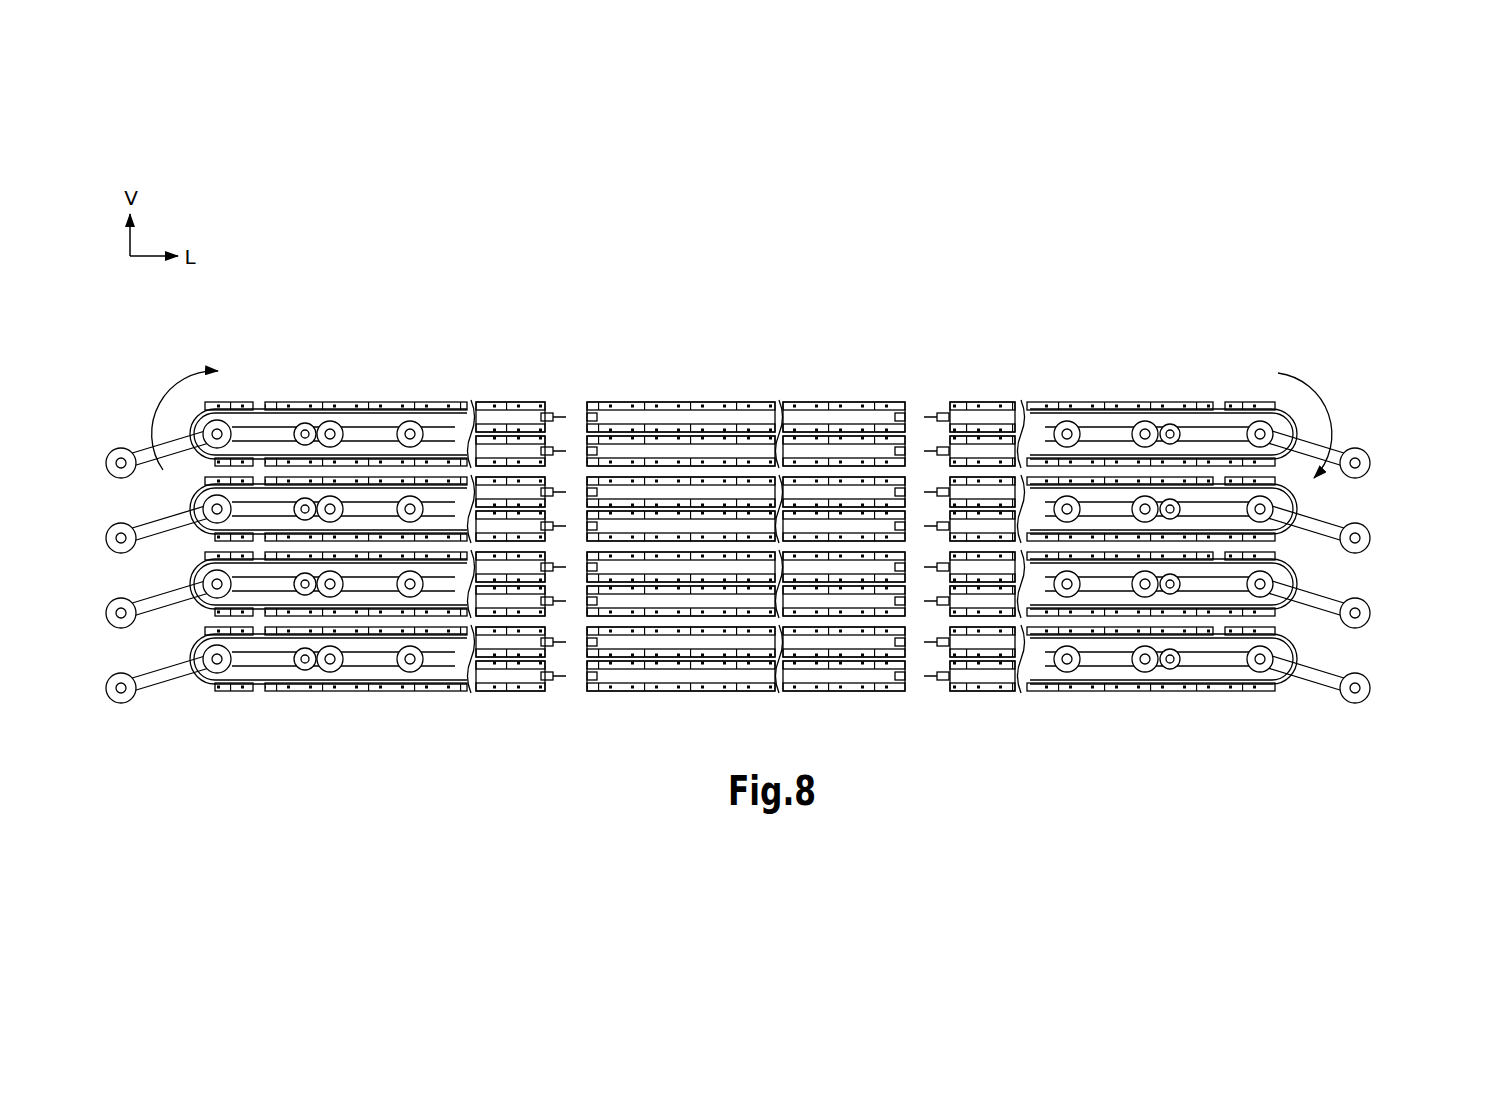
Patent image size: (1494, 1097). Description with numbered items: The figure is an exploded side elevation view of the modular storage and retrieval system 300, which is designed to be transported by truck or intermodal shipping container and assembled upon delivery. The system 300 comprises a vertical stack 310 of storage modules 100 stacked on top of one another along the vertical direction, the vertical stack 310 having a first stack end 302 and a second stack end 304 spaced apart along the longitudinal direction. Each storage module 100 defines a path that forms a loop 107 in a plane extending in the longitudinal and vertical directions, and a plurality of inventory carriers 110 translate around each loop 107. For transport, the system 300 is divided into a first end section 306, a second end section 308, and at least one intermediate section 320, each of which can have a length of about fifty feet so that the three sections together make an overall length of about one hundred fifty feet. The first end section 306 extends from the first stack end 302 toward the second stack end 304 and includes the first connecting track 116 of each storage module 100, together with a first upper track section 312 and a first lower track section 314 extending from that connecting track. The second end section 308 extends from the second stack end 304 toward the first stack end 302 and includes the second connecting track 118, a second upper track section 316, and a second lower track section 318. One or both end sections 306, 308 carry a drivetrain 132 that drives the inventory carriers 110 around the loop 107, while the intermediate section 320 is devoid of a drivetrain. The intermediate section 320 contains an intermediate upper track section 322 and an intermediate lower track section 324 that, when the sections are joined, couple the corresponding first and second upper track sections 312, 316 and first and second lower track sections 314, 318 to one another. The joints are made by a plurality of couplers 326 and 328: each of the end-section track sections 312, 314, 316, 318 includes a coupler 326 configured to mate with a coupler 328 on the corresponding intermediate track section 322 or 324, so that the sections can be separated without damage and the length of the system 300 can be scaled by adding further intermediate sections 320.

The storage module 100 is at (1366, 442).
The loop 107 is at (165, 393).
The inventory carriers 110 is at (660, 401).
The first connecting track 116 is at (1280, 420).
The second connecting track 118 is at (190, 428).
The drivetrain 132 is at (286, 424).
The modular storage and retrieval system 300 is at (820, 298).
The first stack end 302 is at (1286, 333).
The second stack end 304 is at (264, 345).
The first end section 306 is at (1068, 320).
The second end section 308 is at (386, 350).
The vertical stack 310 is at (1388, 387).
The first upper track section 312 is at (445, 486).
The first lower track section 314 is at (500, 478).
The second upper track section 316 is at (1030, 448).
The second lower track section 318 is at (983, 448).
The intermediate section 320 is at (720, 332).
The intermediate upper track section 322 is at (770, 446).
The intermediate lower track section 324 is at (850, 446).
The coupler 326 is at (551, 447).
The coupler 328 is at (600, 450).